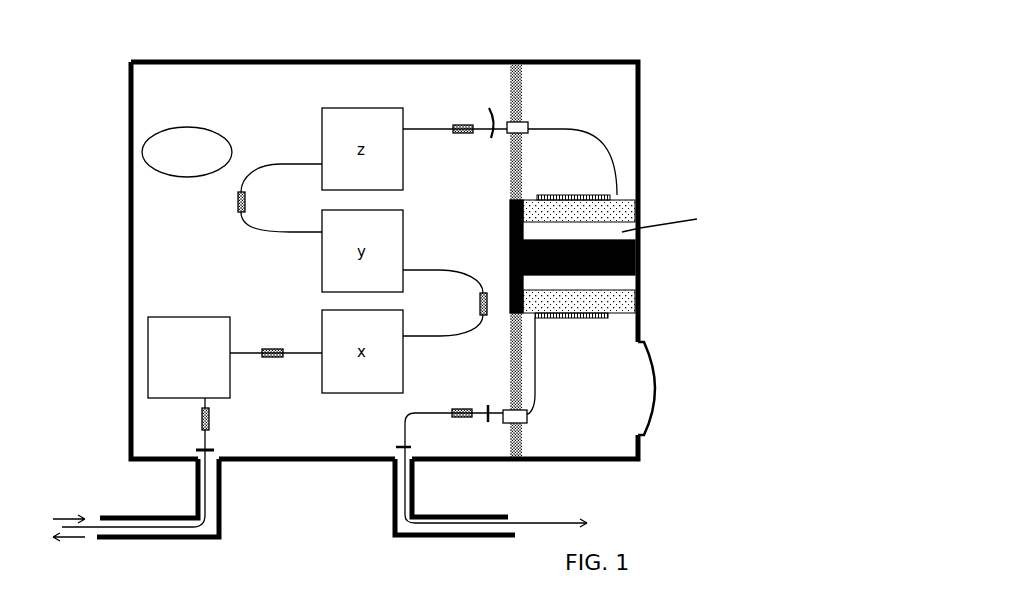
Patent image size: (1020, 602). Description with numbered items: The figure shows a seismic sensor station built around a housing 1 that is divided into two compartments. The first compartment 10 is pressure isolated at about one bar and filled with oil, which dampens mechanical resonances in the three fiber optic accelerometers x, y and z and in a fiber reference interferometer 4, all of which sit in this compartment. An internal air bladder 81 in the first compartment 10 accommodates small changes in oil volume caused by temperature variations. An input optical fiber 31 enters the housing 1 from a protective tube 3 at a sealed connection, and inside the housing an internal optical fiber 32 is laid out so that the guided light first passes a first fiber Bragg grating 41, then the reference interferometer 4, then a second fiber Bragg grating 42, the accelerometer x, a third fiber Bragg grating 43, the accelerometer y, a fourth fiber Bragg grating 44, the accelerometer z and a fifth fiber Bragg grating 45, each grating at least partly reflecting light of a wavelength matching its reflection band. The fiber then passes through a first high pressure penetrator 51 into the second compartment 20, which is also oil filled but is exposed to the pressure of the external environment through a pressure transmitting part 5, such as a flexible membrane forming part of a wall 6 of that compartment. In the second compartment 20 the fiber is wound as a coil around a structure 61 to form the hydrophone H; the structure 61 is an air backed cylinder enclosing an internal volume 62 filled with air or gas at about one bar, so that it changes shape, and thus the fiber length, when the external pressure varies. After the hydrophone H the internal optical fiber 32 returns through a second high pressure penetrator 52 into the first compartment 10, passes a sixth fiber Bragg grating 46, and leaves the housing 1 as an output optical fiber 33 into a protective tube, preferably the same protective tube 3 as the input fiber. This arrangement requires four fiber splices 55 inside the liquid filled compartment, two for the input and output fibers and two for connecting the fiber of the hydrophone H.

The housing 1 is at (248, 61).
The first compartment 10 is at (238, 105).
The second compartment 20 is at (587, 422).
The internal air bladder 81 is at (143, 148).
The fiber reference interferometer 4 is at (185, 317).
The internal optical fiber 32 is at (252, 238).
The first fiber Bragg grating 41 is at (210, 420).
The second fiber Bragg grating 42 is at (274, 358).
The third fiber Bragg grating 43 is at (483, 317).
The fourth fiber Bragg grating 44 is at (245, 202).
The fifth fiber Bragg grating 45 is at (461, 135).
The sixth fiber Bragg grating 46 is at (461, 410).
The fiber splices 55 is at (173, 440).
The first high pressure penetrator 51 is at (521, 123).
The second high pressure penetrator 52 is at (518, 424).
The wall 6 is at (638, 210).
The structure 61 is at (622, 210).
The internal volume 62 is at (632, 277).
The hydrophone H is at (575, 323).
The pressure transmitting part 5 is at (654, 407).
The input optical fiber 31 is at (198, 486).
The output optical fiber 33 is at (395, 485).
The protective tube 3 is at (184, 541).